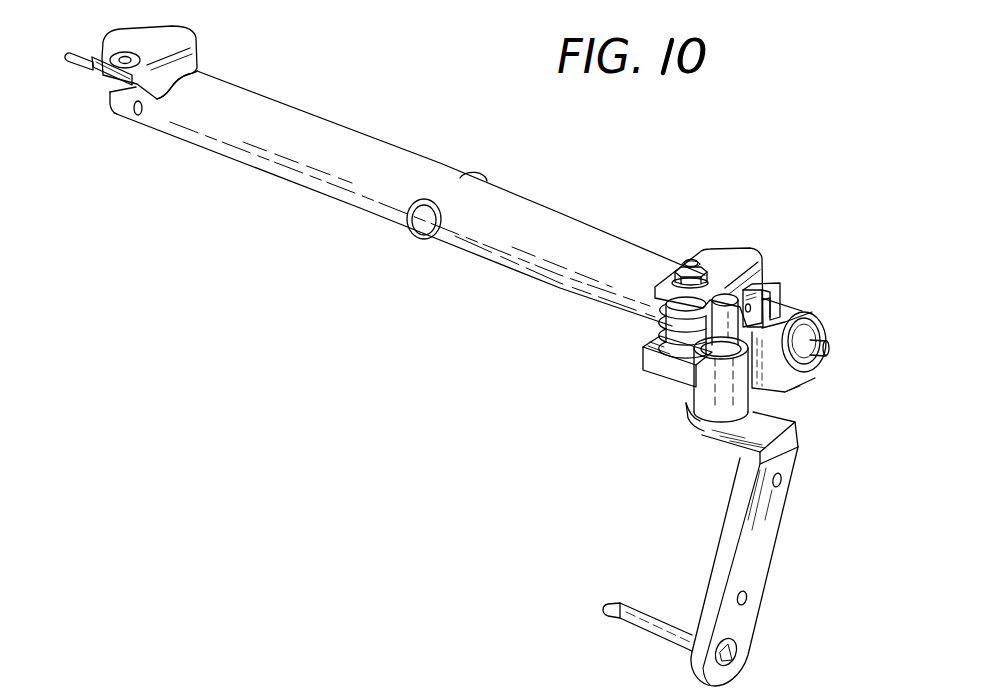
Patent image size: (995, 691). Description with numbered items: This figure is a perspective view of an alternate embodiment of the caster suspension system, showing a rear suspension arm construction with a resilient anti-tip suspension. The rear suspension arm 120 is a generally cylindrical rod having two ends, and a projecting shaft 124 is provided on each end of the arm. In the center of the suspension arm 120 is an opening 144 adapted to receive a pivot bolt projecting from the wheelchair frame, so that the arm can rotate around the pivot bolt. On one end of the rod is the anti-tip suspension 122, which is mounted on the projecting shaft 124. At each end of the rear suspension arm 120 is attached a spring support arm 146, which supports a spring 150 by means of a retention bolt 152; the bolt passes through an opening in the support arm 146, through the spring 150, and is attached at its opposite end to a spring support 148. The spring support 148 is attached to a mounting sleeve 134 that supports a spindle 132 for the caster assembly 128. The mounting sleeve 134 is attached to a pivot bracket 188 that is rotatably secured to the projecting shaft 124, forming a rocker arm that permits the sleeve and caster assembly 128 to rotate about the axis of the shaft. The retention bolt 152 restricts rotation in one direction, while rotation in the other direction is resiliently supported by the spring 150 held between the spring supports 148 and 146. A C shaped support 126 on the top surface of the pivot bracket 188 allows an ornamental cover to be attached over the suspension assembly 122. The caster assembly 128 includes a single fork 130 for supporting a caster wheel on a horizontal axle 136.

The rear suspension arm 120 is at (479, 138).
The anti-tip suspension 122 is at (648, 421).
The projecting shaft 124 is at (78, 72).
The C shaped support 126 is at (768, 298).
The caster assembly 128 is at (784, 565).
The fork 130 is at (778, 500).
The spindle 132 is at (724, 298).
The mounting sleeve 134 is at (708, 410).
The horizontal axle 136 is at (643, 617).
The opening 144 is at (415, 236).
The spring support arm 146 is at (178, 45).
The spring support 148 is at (643, 362).
The spring 150 is at (667, 320).
The retention bolt 152 is at (690, 260).
The pivot bracket 188 is at (788, 381).